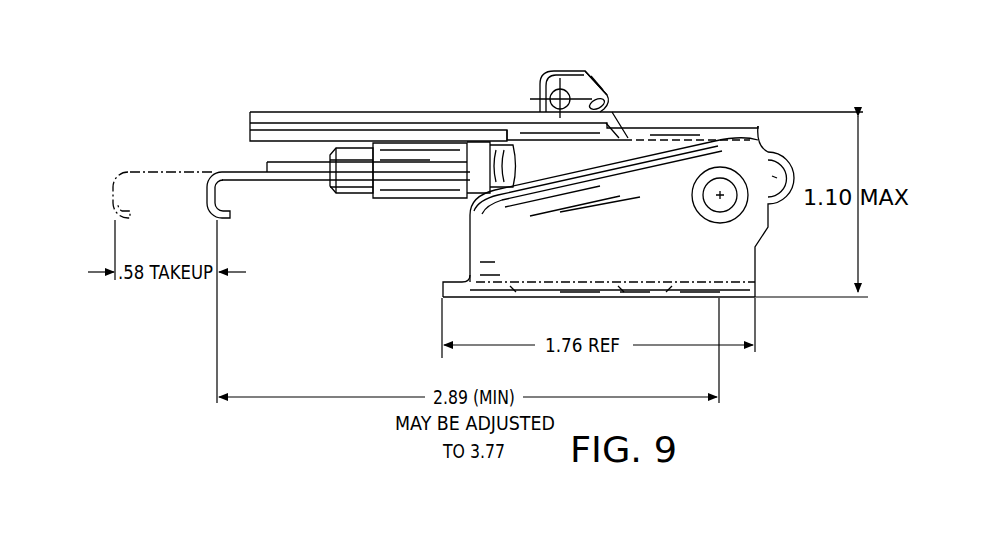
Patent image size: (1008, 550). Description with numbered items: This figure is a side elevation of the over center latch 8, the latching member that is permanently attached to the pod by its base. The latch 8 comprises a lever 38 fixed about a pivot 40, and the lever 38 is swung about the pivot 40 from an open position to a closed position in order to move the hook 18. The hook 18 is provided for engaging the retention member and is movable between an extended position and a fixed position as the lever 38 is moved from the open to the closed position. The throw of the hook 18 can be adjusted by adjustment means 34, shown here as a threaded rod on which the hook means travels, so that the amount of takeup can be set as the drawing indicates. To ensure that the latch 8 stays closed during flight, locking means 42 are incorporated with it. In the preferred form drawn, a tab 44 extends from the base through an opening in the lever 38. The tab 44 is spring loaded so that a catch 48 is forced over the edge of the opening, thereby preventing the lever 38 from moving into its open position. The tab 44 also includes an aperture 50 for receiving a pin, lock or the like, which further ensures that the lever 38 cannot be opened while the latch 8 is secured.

The over center latch 8 is at (200, 114).
The hook 18 is at (232, 183).
The adjustment means 34 is at (362, 195).
The lever 38 is at (460, 112).
The pivot 40 is at (728, 206).
The locking means 42 is at (567, 54).
The tab 44 is at (578, 90).
The catch 48 is at (601, 104).
The aperture 50 is at (597, 78).